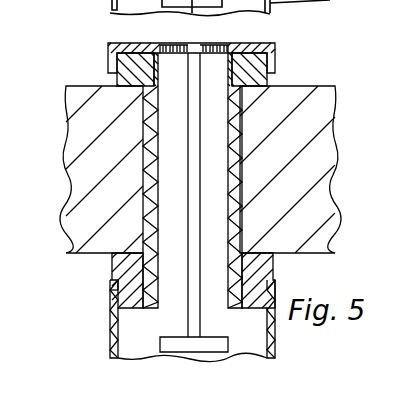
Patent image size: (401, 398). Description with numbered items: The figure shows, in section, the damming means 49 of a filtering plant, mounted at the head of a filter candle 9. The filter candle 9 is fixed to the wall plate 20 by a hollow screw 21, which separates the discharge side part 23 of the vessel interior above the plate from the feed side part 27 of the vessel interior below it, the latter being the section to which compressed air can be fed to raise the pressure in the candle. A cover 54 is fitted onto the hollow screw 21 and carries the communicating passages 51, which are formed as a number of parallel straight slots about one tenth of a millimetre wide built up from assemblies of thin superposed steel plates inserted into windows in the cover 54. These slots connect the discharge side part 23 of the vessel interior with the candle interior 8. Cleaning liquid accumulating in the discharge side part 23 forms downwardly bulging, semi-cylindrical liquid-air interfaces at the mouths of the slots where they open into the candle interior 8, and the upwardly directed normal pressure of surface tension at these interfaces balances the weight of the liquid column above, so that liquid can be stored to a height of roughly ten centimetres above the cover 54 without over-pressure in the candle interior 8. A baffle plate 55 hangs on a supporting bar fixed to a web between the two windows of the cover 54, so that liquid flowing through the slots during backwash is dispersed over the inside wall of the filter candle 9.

The damming means 49 is at (275, 43).
The communicating passages 51 is at (160, 43).
The cover 54 is at (115, 60).
The hollow screw 21 is at (268, 78).
The wall plate 20 is at (320, 226).
The discharge side part of the vessel interior 23 is at (80, 81).
The feed side part of the vessel interior 27 is at (95, 279).
The candle interior 8 is at (138, 323).
The filter candle 9 is at (112, 337).
The baffle plate 55 is at (170, 346).